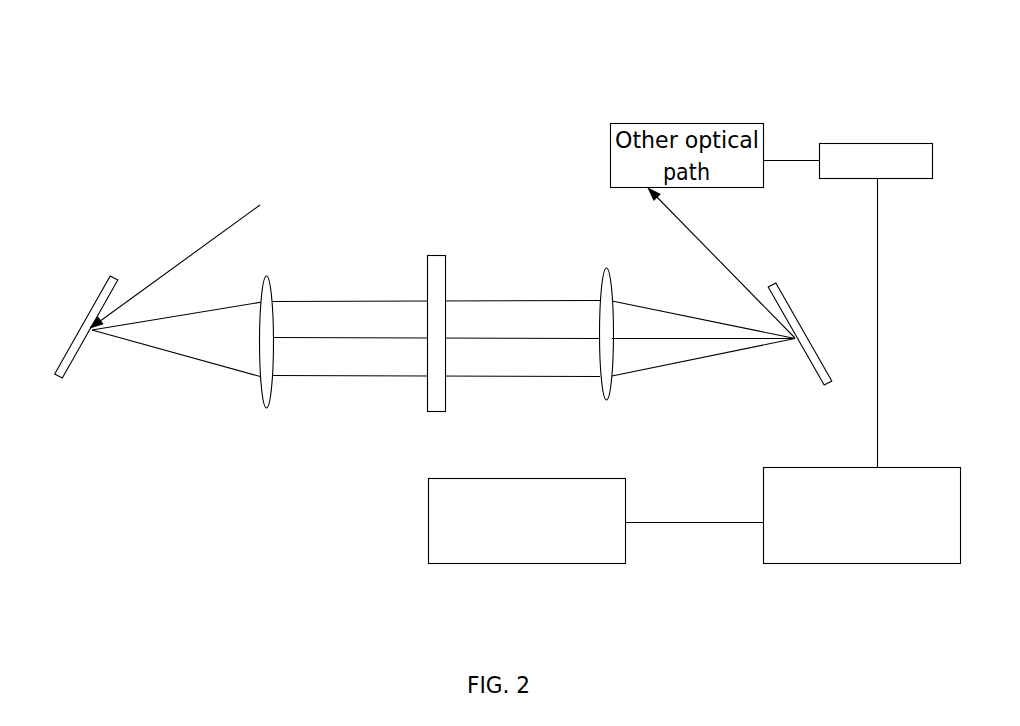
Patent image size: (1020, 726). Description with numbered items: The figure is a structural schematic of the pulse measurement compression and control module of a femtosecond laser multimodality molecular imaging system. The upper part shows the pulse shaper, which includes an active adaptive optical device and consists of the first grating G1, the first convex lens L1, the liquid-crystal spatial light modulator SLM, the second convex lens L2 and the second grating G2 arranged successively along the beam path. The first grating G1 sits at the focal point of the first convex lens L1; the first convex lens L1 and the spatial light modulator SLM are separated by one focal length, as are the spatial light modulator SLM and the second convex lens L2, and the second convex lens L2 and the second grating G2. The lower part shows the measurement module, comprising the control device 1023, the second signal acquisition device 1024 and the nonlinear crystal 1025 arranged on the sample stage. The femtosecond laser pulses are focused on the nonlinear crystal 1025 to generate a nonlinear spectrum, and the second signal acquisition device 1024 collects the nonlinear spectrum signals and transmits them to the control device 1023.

The control device 1023 is at (458, 564).
The second signal acquisition device 1024 is at (862, 564).
The nonlinear crystal 1025 is at (853, 144).
The first grating G1 is at (80, 348).
The second grating G2 is at (804, 352).
The first convex lens L1 is at (280, 367).
The second convex lens L2 is at (624, 356).
The liquid-crystal spatial light modulator SLM is at (459, 357).